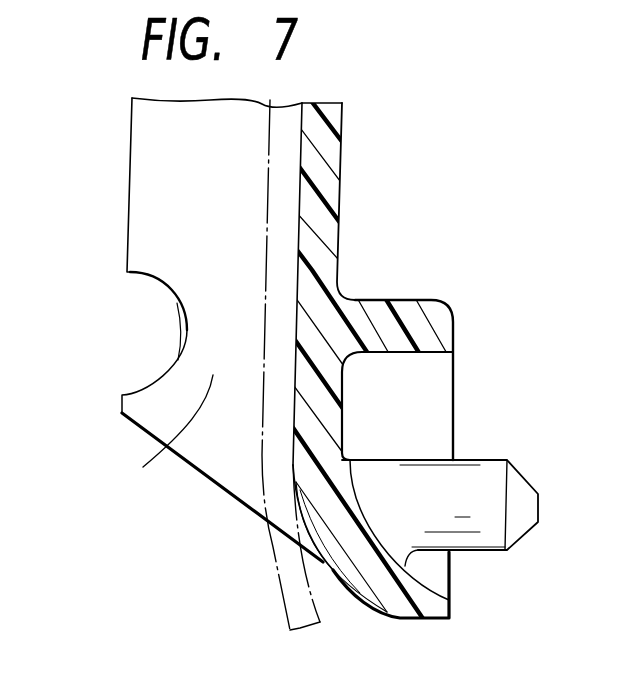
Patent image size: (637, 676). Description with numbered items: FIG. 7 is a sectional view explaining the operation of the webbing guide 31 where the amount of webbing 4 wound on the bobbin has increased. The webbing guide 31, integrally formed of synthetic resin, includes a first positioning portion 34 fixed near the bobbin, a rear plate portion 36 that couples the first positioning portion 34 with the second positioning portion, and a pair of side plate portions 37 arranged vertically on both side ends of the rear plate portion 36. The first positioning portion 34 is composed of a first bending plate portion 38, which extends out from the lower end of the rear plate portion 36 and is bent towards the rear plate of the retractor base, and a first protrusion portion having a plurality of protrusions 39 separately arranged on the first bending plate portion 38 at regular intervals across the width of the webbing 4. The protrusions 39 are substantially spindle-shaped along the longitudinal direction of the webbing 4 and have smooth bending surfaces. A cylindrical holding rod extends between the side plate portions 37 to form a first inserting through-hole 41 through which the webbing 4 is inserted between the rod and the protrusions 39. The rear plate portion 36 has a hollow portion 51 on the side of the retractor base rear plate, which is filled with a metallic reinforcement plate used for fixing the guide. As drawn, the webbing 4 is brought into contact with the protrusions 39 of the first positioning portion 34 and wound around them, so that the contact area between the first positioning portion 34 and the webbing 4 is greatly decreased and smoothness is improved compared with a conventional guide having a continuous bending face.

The webbing 4 is at (288, 569).
The webbing guide 31 is at (342, 208).
The first positioning portion 34 is at (437, 622).
The rear plate portion 36 is at (330, 137).
The side plate portions 37 is at (130, 156).
The first bending plate portion 38 is at (422, 592).
The protrusions 39 is at (357, 598).
The first inserting through-hole 41 is at (170, 438).
The hollow portion 51 is at (383, 310).